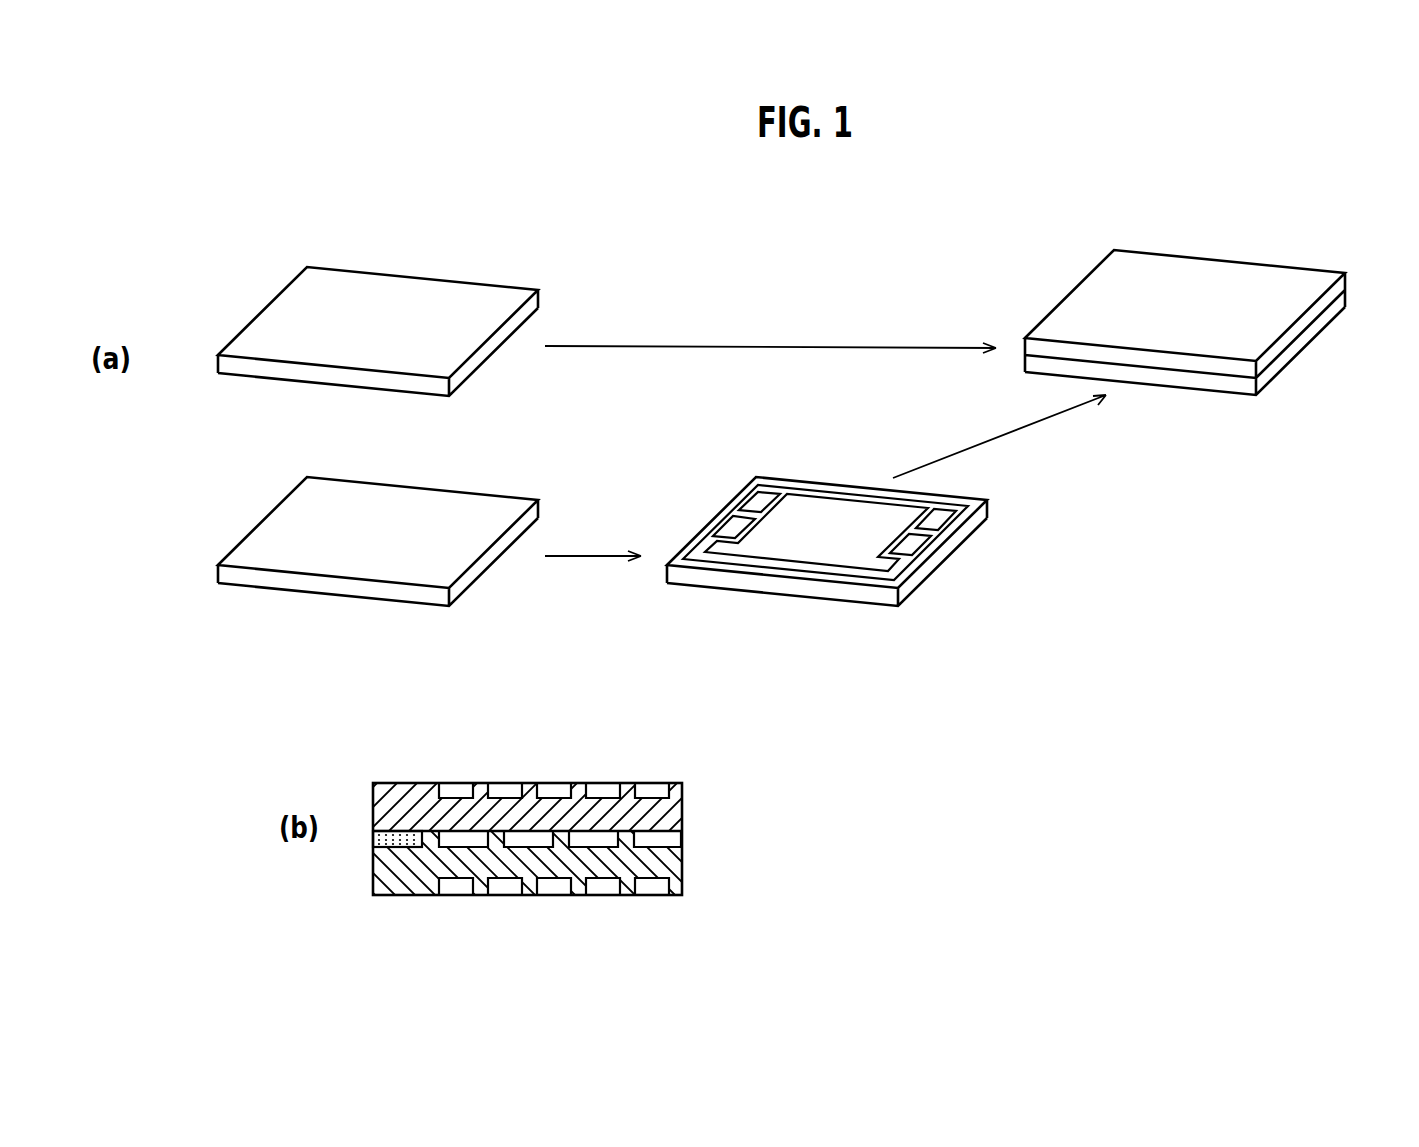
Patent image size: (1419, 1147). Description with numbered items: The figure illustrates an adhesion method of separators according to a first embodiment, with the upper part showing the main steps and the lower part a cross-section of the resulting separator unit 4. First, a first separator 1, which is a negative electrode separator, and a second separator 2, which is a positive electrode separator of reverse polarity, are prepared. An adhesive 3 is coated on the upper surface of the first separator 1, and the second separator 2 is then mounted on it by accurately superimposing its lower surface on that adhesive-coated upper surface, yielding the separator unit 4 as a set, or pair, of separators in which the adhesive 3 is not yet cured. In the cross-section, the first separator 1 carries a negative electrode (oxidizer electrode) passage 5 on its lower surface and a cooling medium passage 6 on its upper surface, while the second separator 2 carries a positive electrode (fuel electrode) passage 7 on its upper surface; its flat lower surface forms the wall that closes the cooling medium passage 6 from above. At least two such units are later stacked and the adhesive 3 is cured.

The first separator 1 is at (465, 513).
The second separator 2 is at (465, 303).
The adhesive 3 is at (905, 510).
The separator unit 4 is at (1250, 194).
The negative electrode passage 5 is at (653, 887).
The cooling medium passage 6 is at (592, 838).
The positive electrode passage 7 is at (656, 792).